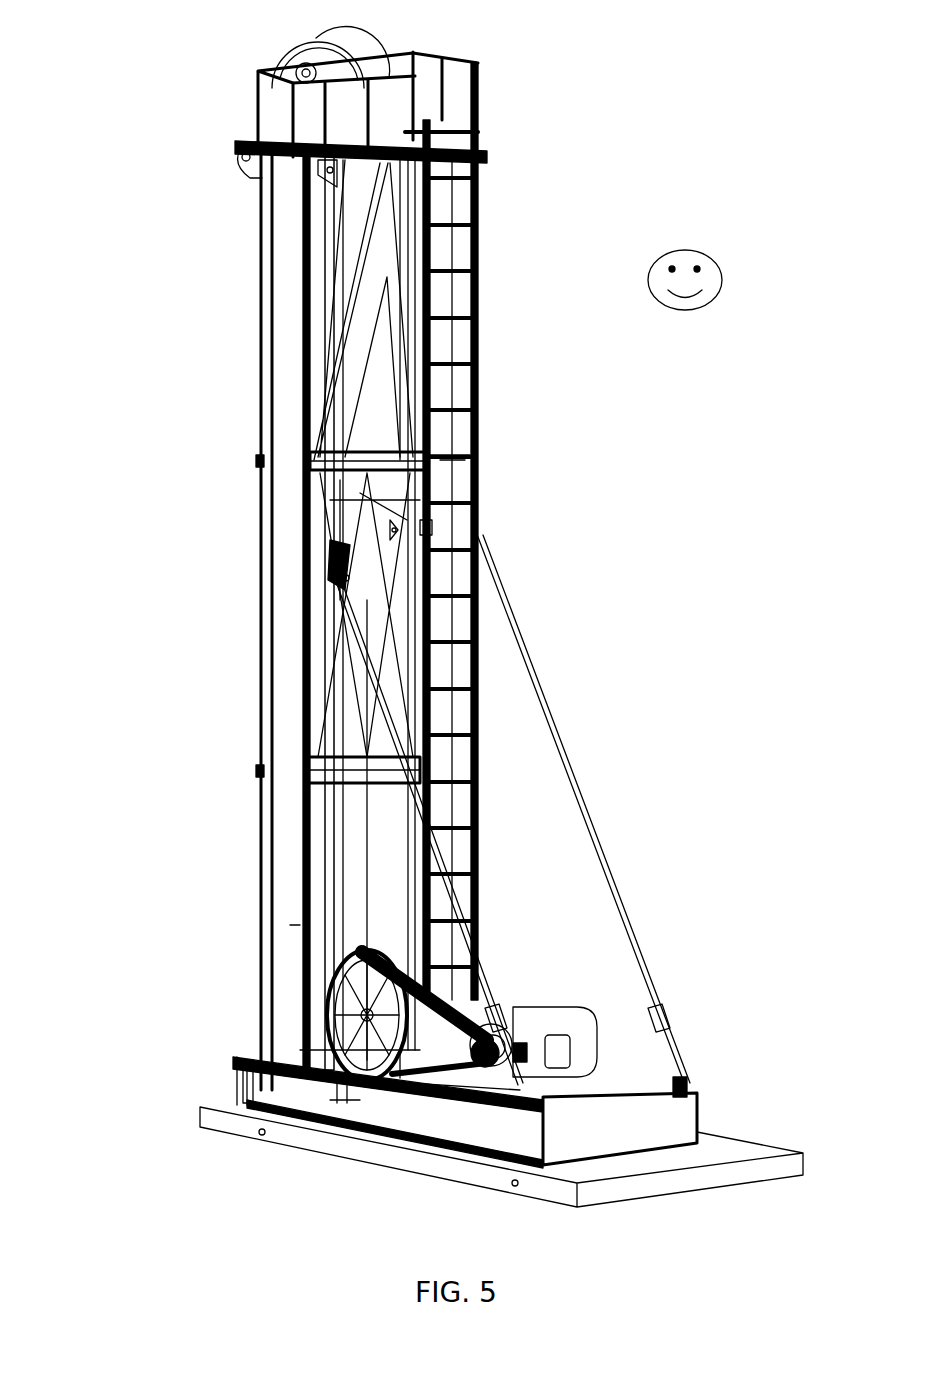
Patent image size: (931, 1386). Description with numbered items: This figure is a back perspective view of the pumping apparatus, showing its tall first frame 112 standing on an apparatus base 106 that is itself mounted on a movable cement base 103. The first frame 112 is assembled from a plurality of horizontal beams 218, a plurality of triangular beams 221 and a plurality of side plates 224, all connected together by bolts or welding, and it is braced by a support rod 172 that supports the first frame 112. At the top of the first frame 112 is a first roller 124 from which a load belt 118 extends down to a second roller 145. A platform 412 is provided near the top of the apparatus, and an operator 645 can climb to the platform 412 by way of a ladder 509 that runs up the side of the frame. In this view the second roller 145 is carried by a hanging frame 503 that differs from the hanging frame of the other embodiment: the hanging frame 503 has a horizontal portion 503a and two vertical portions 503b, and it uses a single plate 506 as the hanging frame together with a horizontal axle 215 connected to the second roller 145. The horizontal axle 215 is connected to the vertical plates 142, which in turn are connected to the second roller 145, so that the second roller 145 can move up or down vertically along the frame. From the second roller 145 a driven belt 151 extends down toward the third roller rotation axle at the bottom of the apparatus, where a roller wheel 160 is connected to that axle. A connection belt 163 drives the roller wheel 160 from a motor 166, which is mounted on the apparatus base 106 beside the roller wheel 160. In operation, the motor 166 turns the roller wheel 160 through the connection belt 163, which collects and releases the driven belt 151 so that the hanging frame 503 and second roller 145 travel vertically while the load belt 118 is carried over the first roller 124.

The movable cement base 103 is at (410, 1167).
The apparatus base 106 is at (385, 1108).
The first frame 112 is at (300, 925).
The load belt 118 is at (363, 53).
The first roller 124 is at (313, 53).
The vertical plates 142 is at (340, 565).
The second roller 145 is at (345, 578).
The driven belt 151 is at (387, 643).
The roller wheel 160 is at (367, 1048).
The connection belt 163 is at (410, 987).
The motor 166 is at (557, 1008).
The support rod 172 is at (572, 725).
The horizontal axle 215 is at (333, 560).
The horizontal beams 218 is at (260, 460).
The triangular beams 221 is at (400, 203).
The side plates 224 is at (455, 290).
The platform 412 is at (462, 125).
The hanging frame 503 is at (385, 525).
The horizontal portion 503a is at (447, 503).
The vertical portions 503b is at (345, 547).
The single plate 506 is at (360, 507).
The ladder 509 is at (428, 222).
The operator 645 is at (720, 265).